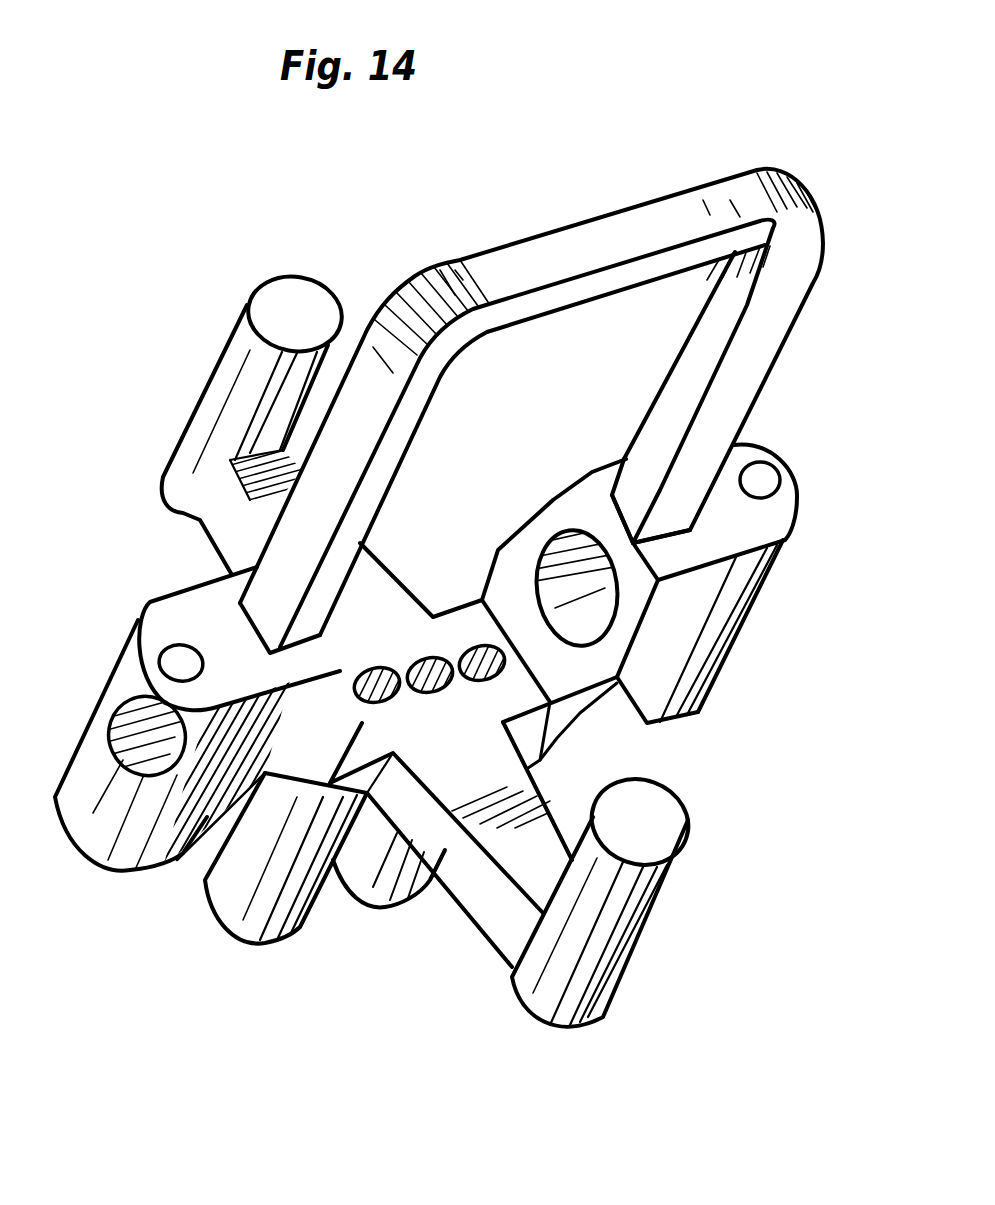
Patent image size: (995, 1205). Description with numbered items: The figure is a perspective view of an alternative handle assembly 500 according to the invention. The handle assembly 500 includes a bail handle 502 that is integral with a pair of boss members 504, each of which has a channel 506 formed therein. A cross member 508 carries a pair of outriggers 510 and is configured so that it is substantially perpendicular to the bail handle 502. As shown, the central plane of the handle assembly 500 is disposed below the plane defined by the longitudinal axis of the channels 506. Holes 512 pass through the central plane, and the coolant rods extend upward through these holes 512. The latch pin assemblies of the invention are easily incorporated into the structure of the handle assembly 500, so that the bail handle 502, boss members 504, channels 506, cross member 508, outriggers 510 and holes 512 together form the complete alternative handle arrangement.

The handle assembly 500 is at (781, 128).
The bail handle 502 is at (613, 235).
The boss members 504 is at (177, 610).
The channels 506 is at (100, 740).
The cross member 508 is at (473, 760).
The outriggers 510 is at (295, 287).
The holes 512 is at (470, 643).